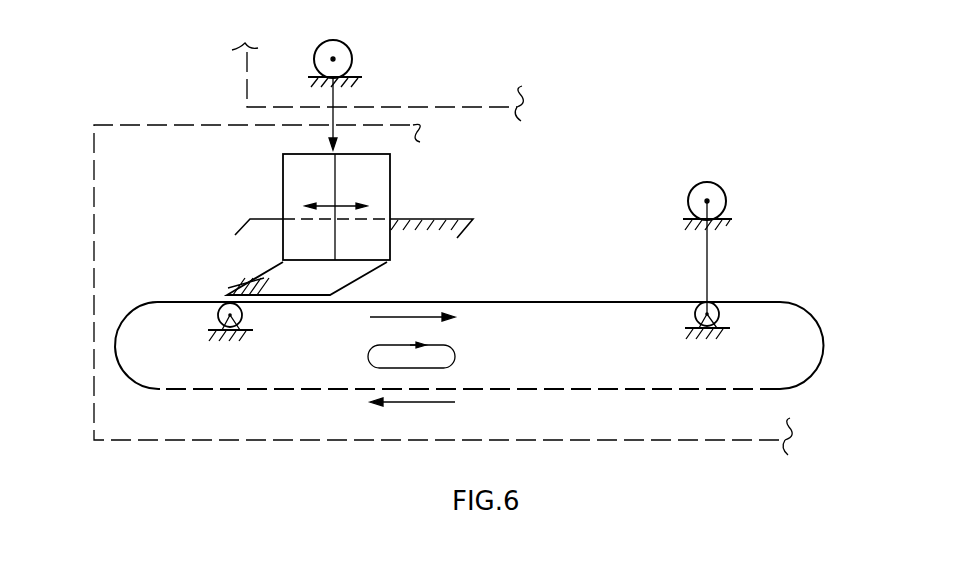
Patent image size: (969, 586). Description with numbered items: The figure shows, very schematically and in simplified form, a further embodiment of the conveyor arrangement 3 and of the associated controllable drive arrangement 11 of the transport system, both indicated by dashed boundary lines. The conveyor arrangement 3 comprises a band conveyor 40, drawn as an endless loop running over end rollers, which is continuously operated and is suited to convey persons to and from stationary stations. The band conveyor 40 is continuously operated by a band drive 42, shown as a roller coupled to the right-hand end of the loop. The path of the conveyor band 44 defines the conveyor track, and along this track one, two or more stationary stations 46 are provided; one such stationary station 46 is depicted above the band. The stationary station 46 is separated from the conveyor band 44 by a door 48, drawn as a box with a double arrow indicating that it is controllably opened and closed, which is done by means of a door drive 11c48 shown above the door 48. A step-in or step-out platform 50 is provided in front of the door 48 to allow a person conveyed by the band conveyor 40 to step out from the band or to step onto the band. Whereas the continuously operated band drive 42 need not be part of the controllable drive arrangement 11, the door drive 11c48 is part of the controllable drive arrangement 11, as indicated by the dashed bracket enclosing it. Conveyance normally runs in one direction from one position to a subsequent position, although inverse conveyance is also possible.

The conveyor arrangement 3 is at (92, 227).
The controllable drive arrangement 11 is at (242, 35).
The door drive 11c48 is at (353, 55).
The door 48 is at (300, 181).
The stationary station 46 is at (447, 220).
The step-in or step-out platform 50 is at (345, 275).
The conveyor band 44 is at (558, 301).
The band conveyor 40 is at (822, 325).
The band drive 42 is at (710, 182).